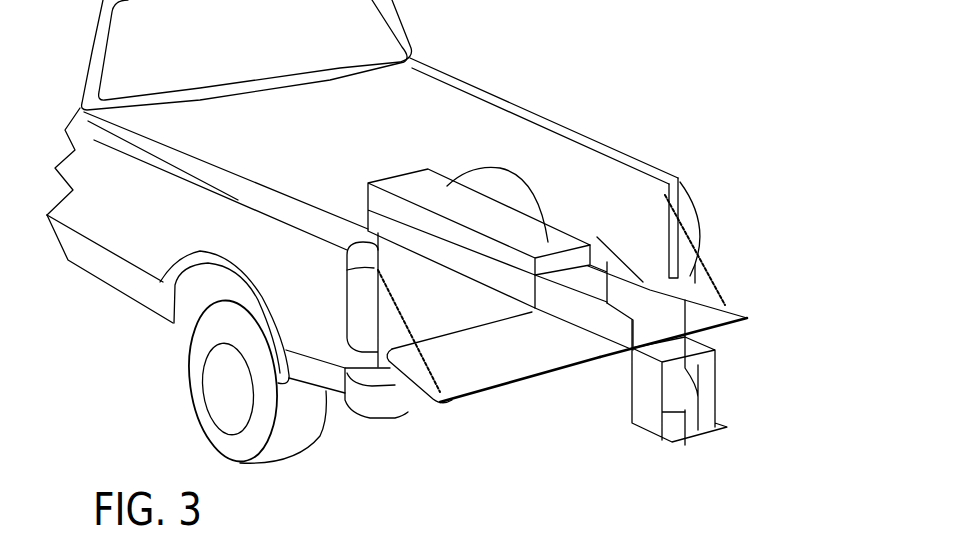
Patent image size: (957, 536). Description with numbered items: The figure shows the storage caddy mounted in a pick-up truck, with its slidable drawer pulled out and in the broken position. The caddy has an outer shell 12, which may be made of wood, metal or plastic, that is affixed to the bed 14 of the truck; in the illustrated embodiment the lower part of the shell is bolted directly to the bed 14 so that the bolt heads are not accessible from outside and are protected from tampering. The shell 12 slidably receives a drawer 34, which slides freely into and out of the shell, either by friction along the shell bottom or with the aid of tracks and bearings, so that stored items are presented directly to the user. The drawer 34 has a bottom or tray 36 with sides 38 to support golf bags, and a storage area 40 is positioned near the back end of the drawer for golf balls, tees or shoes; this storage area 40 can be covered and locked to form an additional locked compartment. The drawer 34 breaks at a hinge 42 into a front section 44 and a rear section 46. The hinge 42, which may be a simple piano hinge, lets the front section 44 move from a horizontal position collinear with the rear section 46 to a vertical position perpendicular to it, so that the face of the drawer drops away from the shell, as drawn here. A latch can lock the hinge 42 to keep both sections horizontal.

The outer shell 12 is at (408, 183).
The bed 14 is at (430, 305).
The drawer 34 is at (595, 335).
The tray 36 is at (607, 303).
The sides 38 is at (577, 308).
The storage area 40 is at (590, 253).
The hinge 42 is at (653, 350).
The front section 44 is at (675, 390).
The rear section 46 is at (607, 300).